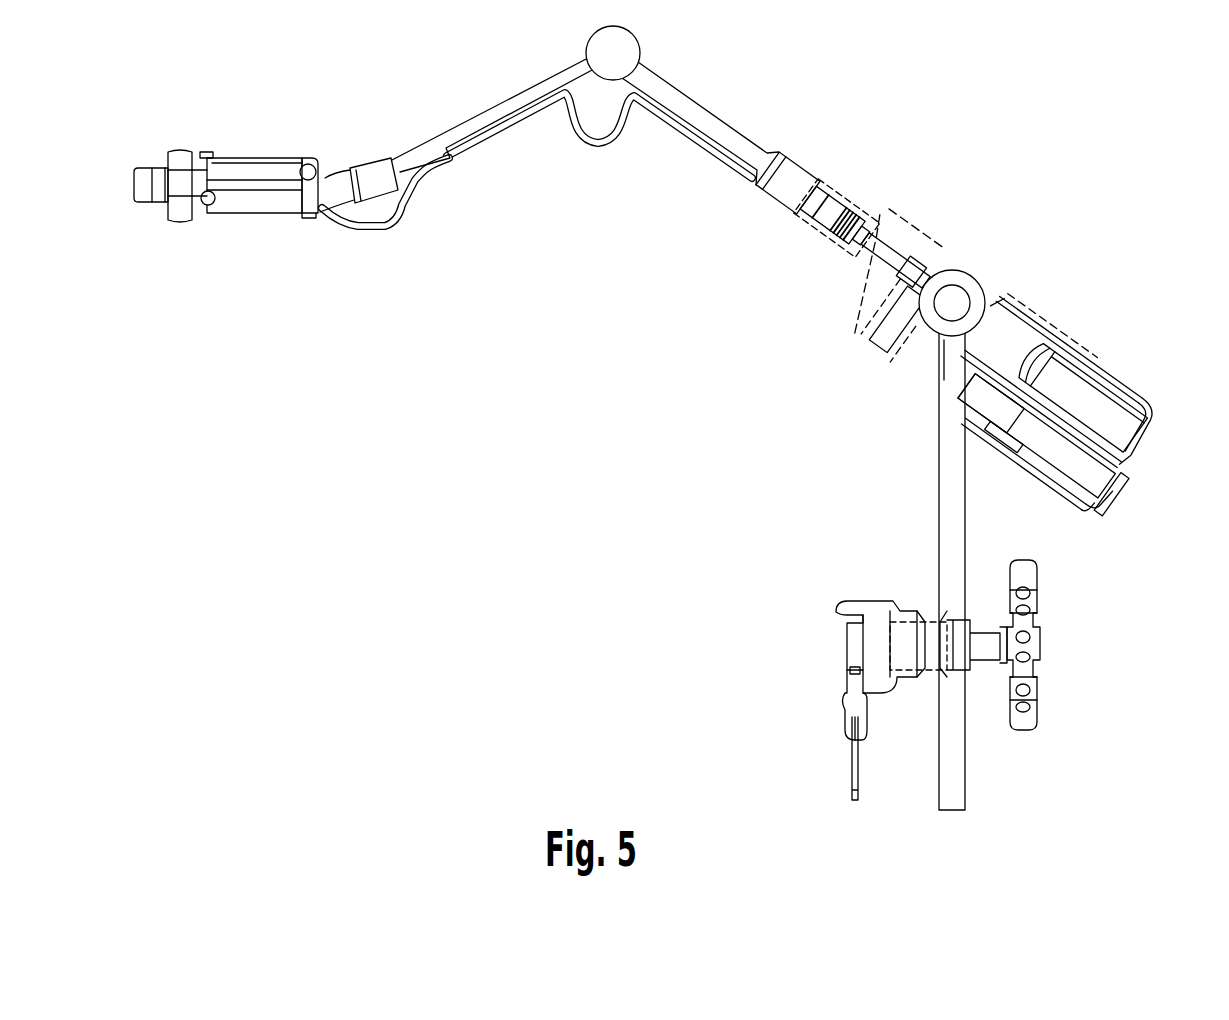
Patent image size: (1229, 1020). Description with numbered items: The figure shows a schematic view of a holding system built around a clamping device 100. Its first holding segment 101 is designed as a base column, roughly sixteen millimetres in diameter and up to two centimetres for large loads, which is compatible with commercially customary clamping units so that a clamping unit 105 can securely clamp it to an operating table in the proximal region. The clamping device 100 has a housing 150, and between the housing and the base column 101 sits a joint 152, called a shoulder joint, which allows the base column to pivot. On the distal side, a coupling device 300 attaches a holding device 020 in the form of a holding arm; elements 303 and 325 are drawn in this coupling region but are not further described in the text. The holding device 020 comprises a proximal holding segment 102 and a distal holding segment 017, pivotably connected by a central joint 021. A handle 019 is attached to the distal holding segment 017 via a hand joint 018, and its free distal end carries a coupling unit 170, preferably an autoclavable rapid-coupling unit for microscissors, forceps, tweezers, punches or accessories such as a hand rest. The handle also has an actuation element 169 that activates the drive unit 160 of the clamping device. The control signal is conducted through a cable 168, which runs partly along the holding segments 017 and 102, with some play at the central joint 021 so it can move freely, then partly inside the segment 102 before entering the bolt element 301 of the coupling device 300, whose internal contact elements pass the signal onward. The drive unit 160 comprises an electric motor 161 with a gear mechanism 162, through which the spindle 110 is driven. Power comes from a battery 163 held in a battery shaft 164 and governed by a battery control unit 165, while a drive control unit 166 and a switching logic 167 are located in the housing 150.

The distal holding segment 017 is at (517, 102).
The hand joint 018 is at (377, 177).
The handle 019 is at (255, 168).
The holding device 020 is at (644, 182).
The central joint 021 is at (600, 45).
The clamping device 100 is at (986, 473).
The first holding segment 101 is at (948, 545).
The proximal holding segment 102 is at (687, 103).
The clamping unit 105 is at (838, 684).
The spindle 110 is at (941, 281).
The housing 150 is at (872, 315).
The joint 152 is at (980, 297).
The drive unit 160 is at (1022, 376).
The electric motor 161 is at (1080, 380).
The gear mechanism 162 is at (1013, 317).
The battery 163 is at (1122, 502).
The battery shaft 164 is at (1000, 436).
The battery control unit 165 is at (927, 397).
The drive control unit 166 is at (913, 362).
The switching logic 167 is at (888, 362).
The cable 168 is at (596, 150).
The actuation element 169 is at (307, 163).
The coupling unit 170 is at (145, 177).
The coupling device 300 is at (866, 176).
The bolt element 301 is at (787, 170).
The tool shaft 303 is at (843, 217).
The dashed tool outline 325 is at (905, 134).